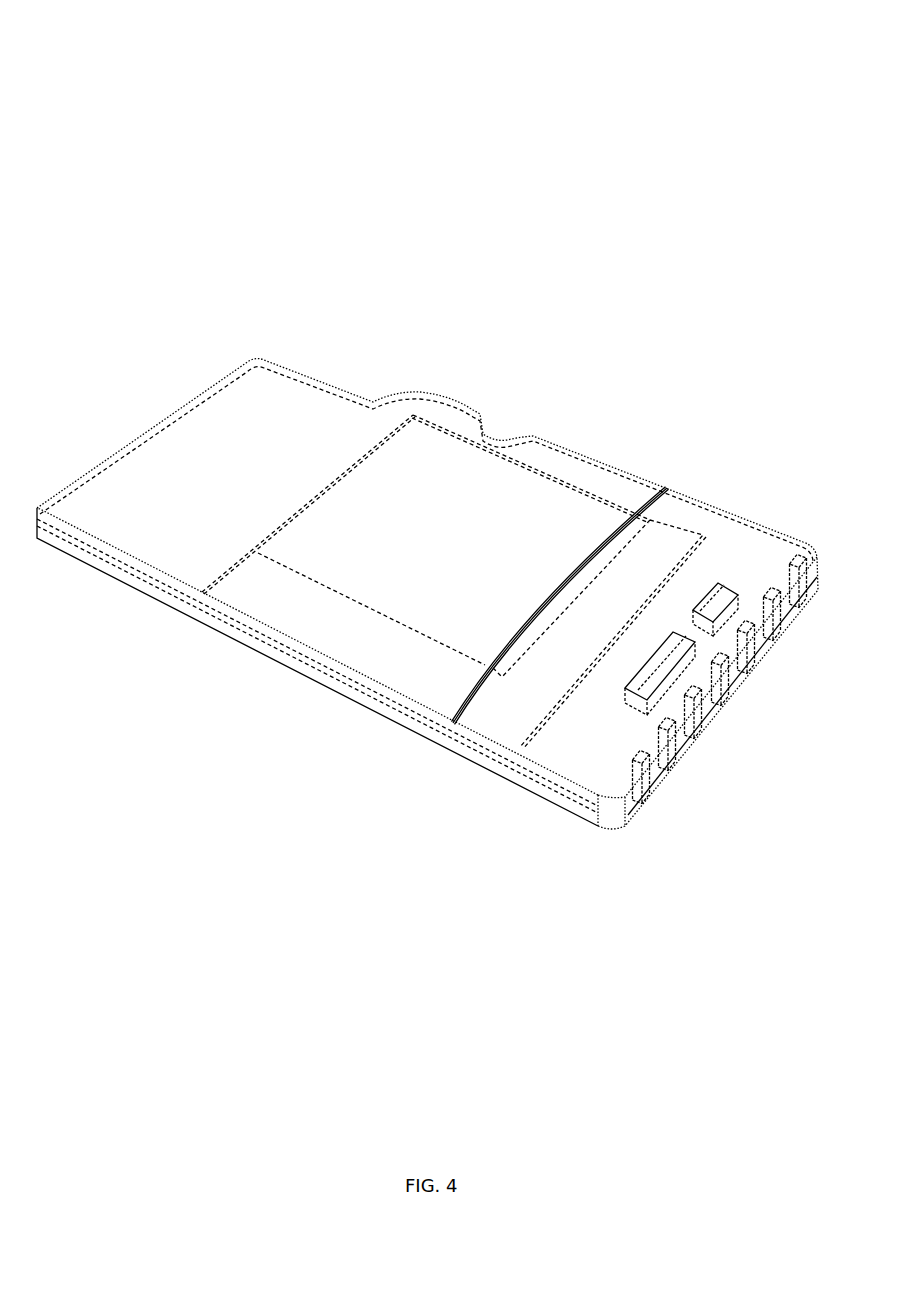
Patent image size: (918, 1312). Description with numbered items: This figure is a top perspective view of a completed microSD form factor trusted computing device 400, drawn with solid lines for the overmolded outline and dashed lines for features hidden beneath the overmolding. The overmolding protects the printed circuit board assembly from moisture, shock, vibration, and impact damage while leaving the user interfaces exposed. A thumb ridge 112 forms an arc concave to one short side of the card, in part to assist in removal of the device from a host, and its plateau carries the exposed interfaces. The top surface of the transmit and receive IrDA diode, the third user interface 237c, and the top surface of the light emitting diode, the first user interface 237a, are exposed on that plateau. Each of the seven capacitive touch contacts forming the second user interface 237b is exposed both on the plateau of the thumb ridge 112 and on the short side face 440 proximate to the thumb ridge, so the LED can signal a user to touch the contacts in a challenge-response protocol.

The trusted computing device 400 is at (124, 50).
The short side face 440 is at (253, 357).
The thumb ridge 112 is at (520, 703).
The first user interface 237a is at (722, 606).
The second user interface 237b is at (711, 705).
The third user interface 237c is at (652, 675).